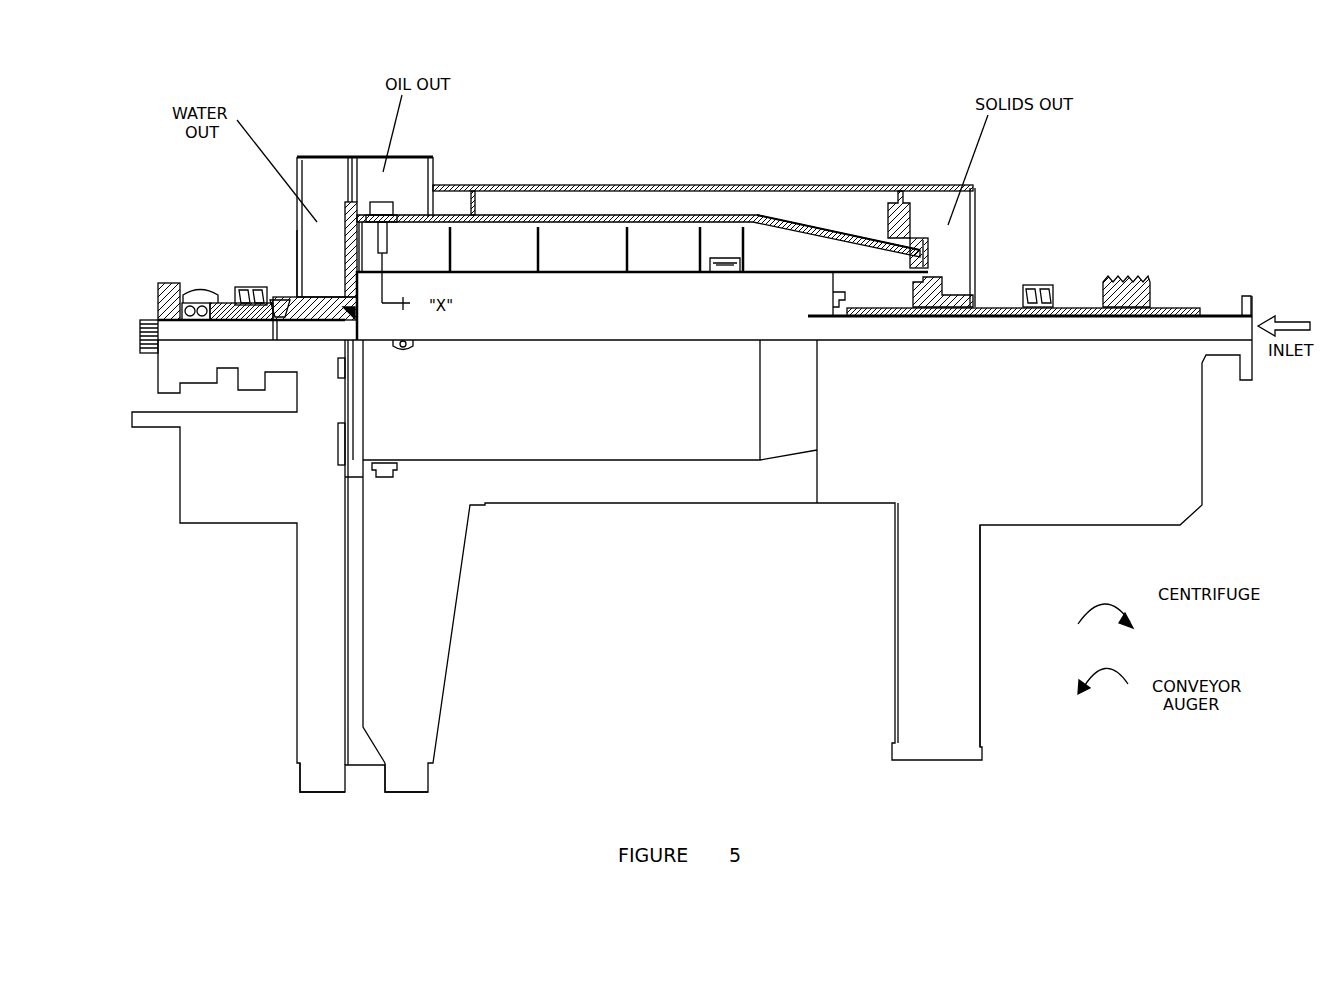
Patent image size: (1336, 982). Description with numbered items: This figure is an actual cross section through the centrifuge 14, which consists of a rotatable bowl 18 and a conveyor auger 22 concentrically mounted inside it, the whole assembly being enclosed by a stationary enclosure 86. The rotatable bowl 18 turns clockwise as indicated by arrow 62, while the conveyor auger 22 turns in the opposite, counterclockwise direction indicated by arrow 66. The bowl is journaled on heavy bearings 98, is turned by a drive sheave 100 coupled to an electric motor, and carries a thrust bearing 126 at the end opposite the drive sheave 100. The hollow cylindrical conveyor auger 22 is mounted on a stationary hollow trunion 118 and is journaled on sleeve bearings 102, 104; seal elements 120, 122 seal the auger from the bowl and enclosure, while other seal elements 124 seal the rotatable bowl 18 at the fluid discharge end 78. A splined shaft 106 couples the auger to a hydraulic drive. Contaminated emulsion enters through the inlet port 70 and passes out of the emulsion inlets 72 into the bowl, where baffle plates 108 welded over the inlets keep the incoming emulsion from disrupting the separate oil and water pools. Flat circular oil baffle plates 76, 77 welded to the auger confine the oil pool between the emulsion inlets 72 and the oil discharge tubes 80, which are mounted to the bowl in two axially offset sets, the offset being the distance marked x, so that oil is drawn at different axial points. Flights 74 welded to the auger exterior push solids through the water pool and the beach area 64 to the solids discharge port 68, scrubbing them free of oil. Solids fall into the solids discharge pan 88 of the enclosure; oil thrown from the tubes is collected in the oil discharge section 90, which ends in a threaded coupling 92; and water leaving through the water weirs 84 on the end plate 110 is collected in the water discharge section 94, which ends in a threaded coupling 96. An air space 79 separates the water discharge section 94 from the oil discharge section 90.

The centrifuge 14 is at (723, 187).
The rotatable bowl 18 is at (522, 217).
The conveyor auger 22 is at (474, 270).
The arrow 62 is at (1123, 610).
The beach area 64 is at (840, 228).
The arrow 66 is at (1120, 672).
The solids discharge port 68 is at (925, 245).
The inlet port 70 is at (1250, 342).
The emulsion inlets 72 is at (727, 273).
The flights 74 is at (697, 232).
The oil baffle plate 76 is at (756, 218).
The oil baffle plate 77 is at (360, 200).
The fluid discharge end 78 is at (335, 195).
The air space 79 is at (352, 200).
The oil discharge tubes 80 is at (383, 207).
The water weirs 84 is at (345, 473).
The stationary enclosure 86 is at (825, 187).
The solids discharge pan 88 is at (918, 667).
The oil discharge section 90 is at (405, 185).
The threaded coupling 92 is at (417, 778).
The water discharge section 94 is at (310, 188).
The threaded coupling 96 is at (318, 780).
The heavy bearings 98 is at (255, 288).
The drive sheave 100 is at (1138, 277).
The sleeve bearing 102 is at (227, 303).
The sleeve bearing 104 is at (975, 307).
The splined shaft 106 is at (143, 322).
The baffle plates 108 is at (707, 273).
The end plate 110 is at (350, 400).
The stationary hollow trunion 118 is at (812, 313).
The seal element 120 is at (283, 300).
The seal element 122 is at (880, 316).
The seal elements 124 is at (338, 307).
The thrust bearing 126 is at (192, 303).